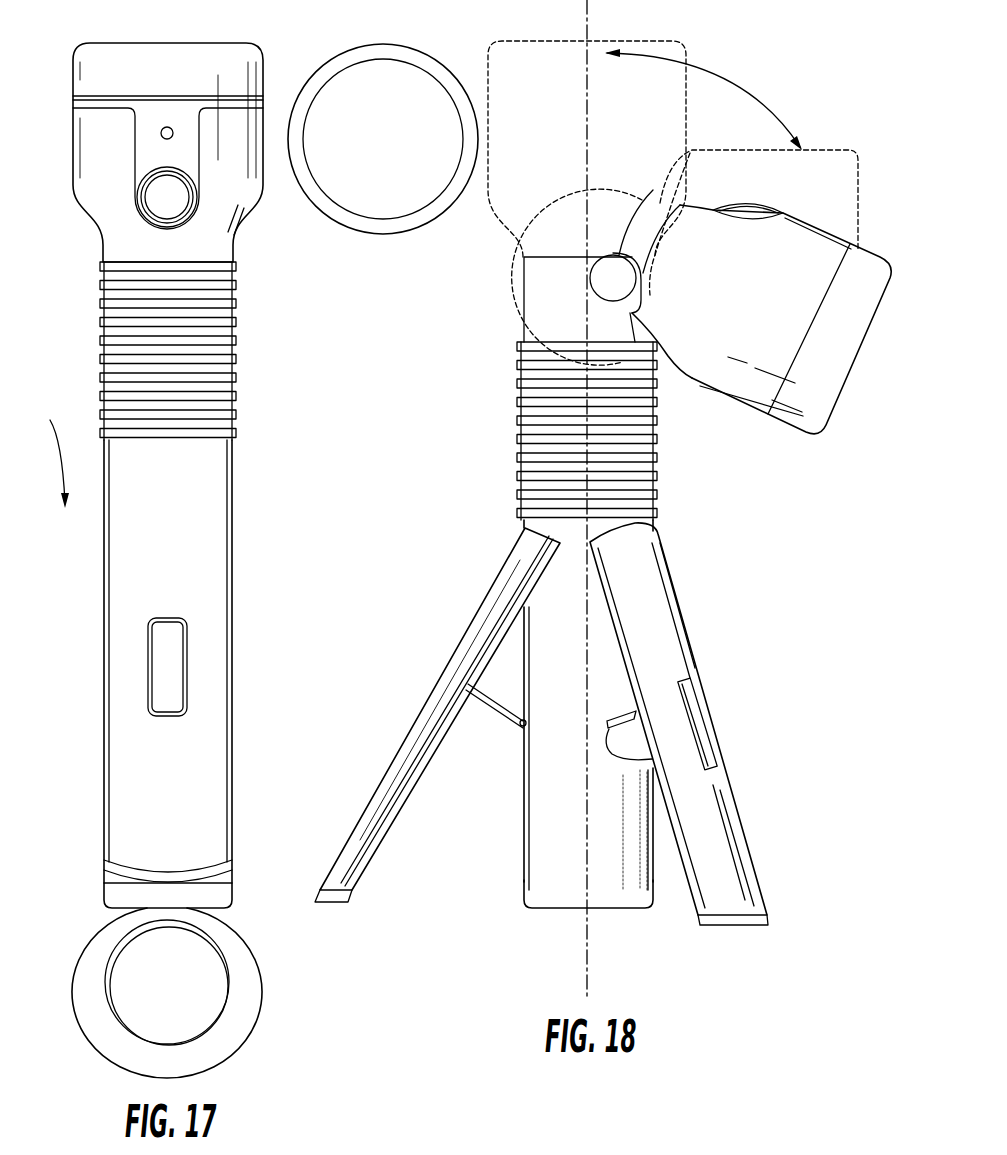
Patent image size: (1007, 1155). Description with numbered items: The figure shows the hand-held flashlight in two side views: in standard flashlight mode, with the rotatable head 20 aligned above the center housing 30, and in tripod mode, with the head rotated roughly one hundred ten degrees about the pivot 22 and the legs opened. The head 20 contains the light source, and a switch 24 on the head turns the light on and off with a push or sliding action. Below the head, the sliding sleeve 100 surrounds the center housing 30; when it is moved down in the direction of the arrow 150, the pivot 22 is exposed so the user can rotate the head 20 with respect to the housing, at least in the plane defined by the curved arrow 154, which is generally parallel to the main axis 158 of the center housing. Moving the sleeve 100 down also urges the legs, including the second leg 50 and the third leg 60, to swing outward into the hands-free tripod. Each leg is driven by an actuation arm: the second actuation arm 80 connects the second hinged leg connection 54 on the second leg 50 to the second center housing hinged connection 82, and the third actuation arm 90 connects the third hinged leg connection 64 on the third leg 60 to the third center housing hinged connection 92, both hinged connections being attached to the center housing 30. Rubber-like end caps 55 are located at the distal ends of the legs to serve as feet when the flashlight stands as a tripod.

In FIG. 17, the rotatable head 20 is at (93, 200).
In FIG. 18, the rotatable head 20 is at (745, 405).
In FIG. 18, the pivot 22 is at (653, 188).
In FIG. 17, the switch 24 is at (197, 195).
In FIG. 18, the switch 24 is at (755, 198).
In FIG. 18, the center housing 30 is at (540, 837).
In FIG. 18, the second leg 50 is at (387, 783).
In FIG. 18, the second hinged leg connection 54 is at (440, 672).
In FIG. 17, the rubber end cap 55 is at (230, 875).
In FIG. 18, the rubber end cap 55 is at (803, 897).
In FIG. 18, the third leg 60 is at (718, 815).
In FIG. 18, the third hinged leg connection 64 is at (680, 675).
In FIG. 18, the second actuation arm 80 is at (483, 707).
In FIG. 18, the second center housing hinged connection 82 is at (515, 724).
In FIG. 18, the third actuation arm 90 is at (625, 710).
In FIG. 18, the third center housing hinged connection 92 is at (630, 760).
In FIG. 17, the sliding sleeve 100 is at (227, 423).
In FIG. 18, the sliding sleeve 100 is at (657, 490).
In FIG. 17, the arrow 150 is at (49, 448).
In FIG. 18, the curved arrow 154 is at (743, 92).
In FIG. 17, the main axis 158 is at (228, 508).
In FIG. 18, the main axis 158 is at (580, 863).